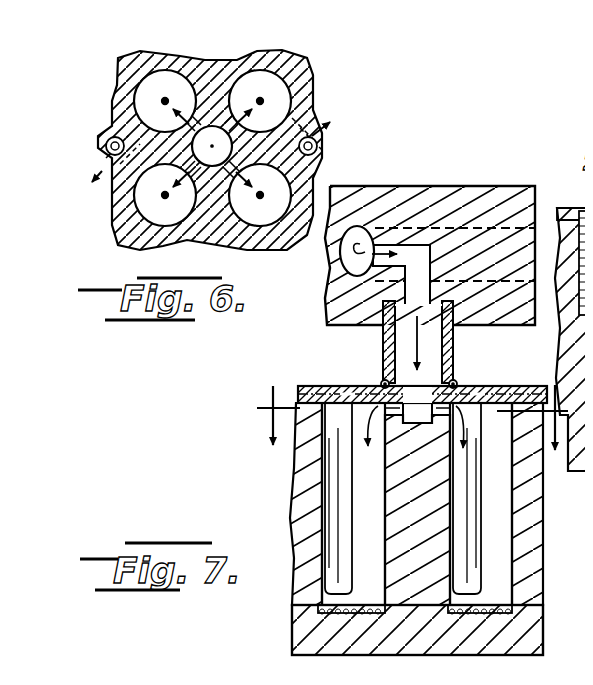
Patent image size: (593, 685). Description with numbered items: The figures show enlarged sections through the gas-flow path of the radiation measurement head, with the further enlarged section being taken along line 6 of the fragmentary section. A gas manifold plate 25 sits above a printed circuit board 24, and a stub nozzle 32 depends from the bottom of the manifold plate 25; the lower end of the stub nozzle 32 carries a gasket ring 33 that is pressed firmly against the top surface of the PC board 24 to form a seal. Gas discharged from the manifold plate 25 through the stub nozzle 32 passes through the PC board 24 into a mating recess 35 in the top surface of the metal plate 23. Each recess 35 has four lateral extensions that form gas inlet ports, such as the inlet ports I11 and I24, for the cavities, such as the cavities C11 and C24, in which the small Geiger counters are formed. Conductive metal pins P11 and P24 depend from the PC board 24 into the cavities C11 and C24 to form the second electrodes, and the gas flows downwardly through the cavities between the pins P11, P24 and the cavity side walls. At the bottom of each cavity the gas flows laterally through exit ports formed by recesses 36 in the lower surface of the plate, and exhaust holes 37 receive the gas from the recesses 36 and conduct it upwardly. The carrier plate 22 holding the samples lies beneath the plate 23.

In FIG. 6, the recess 35 is at (210, 132).
In FIG. 7, the recess 35 is at (415, 398).
In FIG. 6, the cavity C24 is at (268, 84).
In FIG. 7, the cavity C24 is at (497, 513).
In FIG. 6, the cavity C11 is at (146, 197).
In FIG. 7, the cavity C11 is at (338, 540).
In FIG. 6, the recess 36 is at (313, 112).
In FIG. 6, the exhaust hole 37 is at (337, 153).
In FIG. 7, the gas manifold plate 25 is at (467, 198).
In FIG. 7, the printed circuit board 24 is at (313, 388).
In FIG. 7, the stub nozzle 32 is at (453, 357).
In FIG. 7, the gasket ring 33 is at (458, 385).
In FIG. 7, the gas inlet port I11 is at (348, 393).
In FIG. 7, the gas inlet port I24 is at (475, 397).
In FIG. 7, the conductive metal pin P11 is at (352, 490).
In FIG. 7, the conductive metal pin P24 is at (480, 535).
In FIG. 7, the metal plate 23 is at (540, 582).
In FIG. 7, the carrier plate 22 is at (528, 638).
In FIG. 7, the section line 6 is at (412, 403).